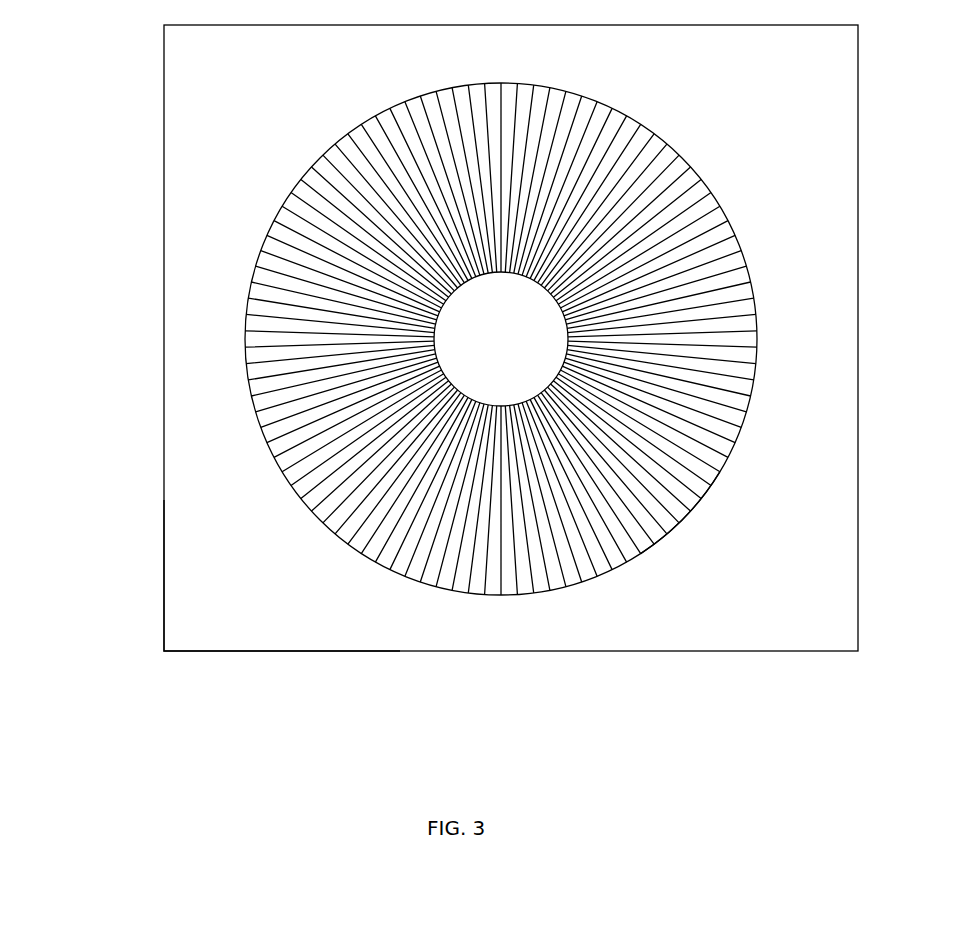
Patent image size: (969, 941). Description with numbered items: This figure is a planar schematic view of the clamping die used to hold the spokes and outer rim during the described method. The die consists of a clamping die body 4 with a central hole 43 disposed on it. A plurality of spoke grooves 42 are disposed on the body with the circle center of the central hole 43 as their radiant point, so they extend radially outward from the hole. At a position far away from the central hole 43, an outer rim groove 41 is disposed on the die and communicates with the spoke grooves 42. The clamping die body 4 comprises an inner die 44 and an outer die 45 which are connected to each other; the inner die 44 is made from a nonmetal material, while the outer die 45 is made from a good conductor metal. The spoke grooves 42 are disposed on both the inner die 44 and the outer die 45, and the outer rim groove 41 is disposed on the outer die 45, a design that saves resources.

The clamping die body 4 is at (203, 407).
The outer rim groove 41 is at (385, 568).
The spoke groove 42 is at (498, 558).
The central hole 43 is at (462, 343).
The inner die 44 is at (592, 533).
The outer die 45 is at (298, 582).